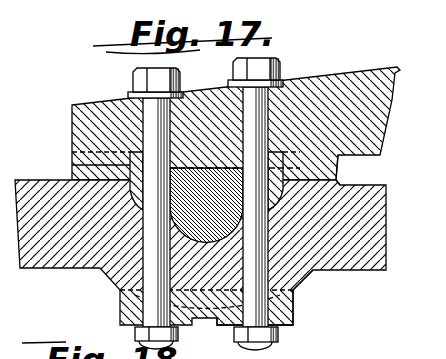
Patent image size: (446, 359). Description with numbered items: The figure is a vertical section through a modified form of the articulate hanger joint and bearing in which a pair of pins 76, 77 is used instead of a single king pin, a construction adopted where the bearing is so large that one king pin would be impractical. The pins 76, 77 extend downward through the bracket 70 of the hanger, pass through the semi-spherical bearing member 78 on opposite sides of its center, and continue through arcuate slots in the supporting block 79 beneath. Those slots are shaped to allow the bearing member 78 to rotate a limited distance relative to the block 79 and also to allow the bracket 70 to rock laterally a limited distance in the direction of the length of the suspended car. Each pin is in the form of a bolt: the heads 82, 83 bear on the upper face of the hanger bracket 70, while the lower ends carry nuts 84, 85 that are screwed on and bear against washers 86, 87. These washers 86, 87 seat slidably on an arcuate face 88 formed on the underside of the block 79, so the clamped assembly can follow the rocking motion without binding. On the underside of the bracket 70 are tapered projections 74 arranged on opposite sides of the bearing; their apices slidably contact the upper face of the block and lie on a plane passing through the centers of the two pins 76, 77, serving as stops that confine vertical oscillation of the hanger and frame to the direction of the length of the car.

The bracket 70 is at (366, 69).
The tapered projections 74 is at (338, 165).
The pin 76 is at (166, 122).
The pin 77 is at (266, 107).
The semi-spherical bearing member 78 is at (130, 183).
The supporting block 79 is at (52, 258).
The head 82 is at (134, 75).
The head 83 is at (272, 62).
The nut 84 is at (135, 333).
The nut 85 is at (278, 338).
The washer 86 is at (120, 318).
The washer 87 is at (294, 318).
The arcuate face 88 is at (298, 288).